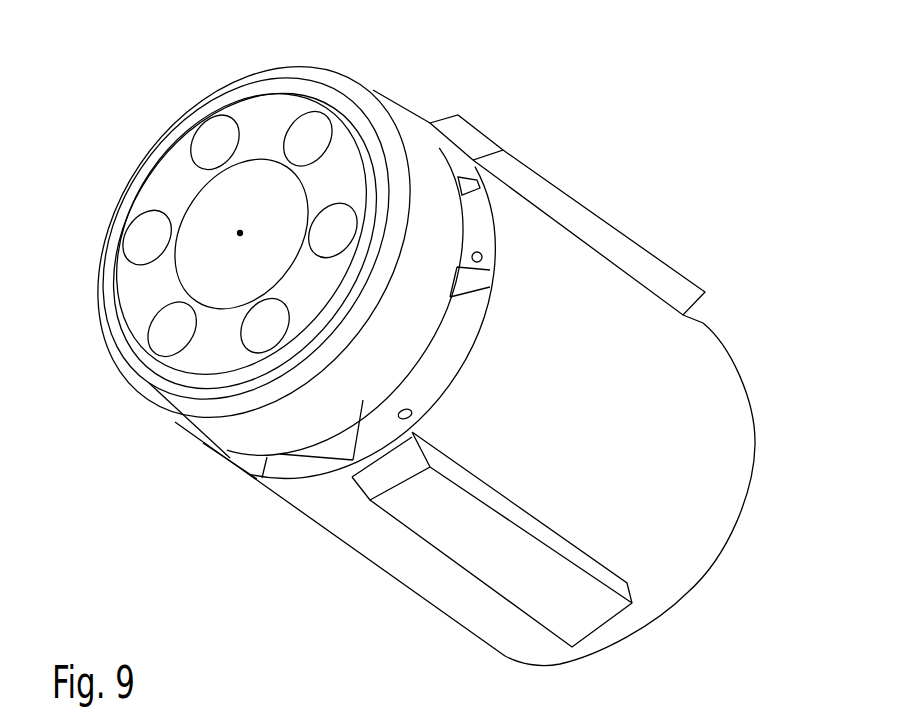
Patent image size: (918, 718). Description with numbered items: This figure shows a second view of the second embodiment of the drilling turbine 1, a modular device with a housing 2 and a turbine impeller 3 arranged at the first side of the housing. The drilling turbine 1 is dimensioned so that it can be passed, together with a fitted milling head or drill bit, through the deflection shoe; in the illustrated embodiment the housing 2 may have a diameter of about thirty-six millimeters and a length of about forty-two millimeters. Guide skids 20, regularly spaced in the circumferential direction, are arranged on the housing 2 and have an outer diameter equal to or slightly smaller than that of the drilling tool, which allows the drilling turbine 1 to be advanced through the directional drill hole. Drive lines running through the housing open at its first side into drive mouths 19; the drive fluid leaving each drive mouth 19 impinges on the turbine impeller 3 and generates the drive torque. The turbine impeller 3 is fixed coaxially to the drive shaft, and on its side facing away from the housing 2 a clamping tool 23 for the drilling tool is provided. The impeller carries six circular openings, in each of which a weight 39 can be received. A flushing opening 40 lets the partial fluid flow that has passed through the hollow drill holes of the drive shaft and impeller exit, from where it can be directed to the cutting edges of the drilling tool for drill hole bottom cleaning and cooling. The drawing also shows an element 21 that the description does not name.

The drilling turbine 1 is at (808, 273).
The housing 2 is at (687, 557).
The turbine impeller 3 is at (165, 178).
The drive mouth 19 is at (412, 415).
The guide skids 20 is at (622, 258).
The strut 21 is at (317, 457).
The clamping tool 23 is at (125, 367).
The weight 39 is at (215, 140).
The flushing opening 40 is at (239, 234).